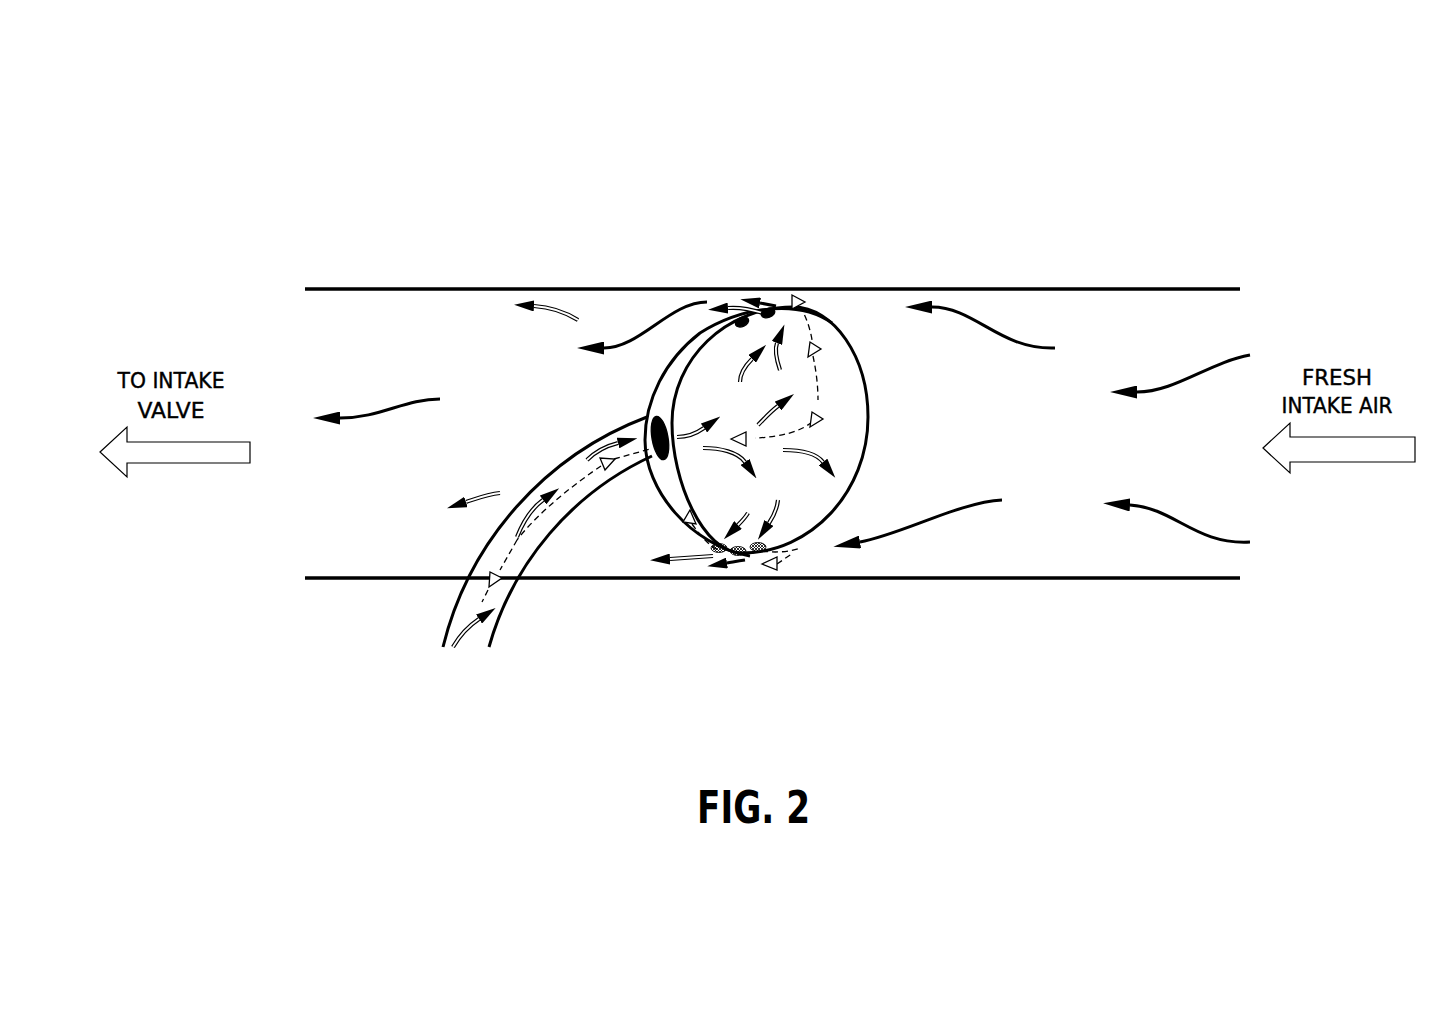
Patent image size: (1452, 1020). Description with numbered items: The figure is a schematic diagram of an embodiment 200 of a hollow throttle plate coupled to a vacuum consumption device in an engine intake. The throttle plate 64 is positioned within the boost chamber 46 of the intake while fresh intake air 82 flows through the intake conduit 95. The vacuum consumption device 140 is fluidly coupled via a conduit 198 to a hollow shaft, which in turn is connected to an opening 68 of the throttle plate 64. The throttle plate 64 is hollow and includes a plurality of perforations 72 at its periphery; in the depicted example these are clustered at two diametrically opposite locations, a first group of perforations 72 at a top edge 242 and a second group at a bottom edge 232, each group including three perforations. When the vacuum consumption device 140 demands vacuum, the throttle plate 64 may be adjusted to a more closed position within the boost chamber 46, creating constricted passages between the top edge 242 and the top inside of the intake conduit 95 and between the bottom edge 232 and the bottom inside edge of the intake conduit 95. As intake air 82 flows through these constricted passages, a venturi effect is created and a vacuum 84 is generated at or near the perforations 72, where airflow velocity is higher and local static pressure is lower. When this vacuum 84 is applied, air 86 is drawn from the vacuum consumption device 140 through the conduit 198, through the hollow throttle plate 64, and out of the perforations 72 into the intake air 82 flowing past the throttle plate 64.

The embodiment of a hollow throttle plate 200 is at (298, 80).
The boost chamber 46 is at (1078, 449).
The throttle plate 64 is at (845, 483).
The opening 68 is at (650, 418).
The perforations 72 is at (744, 328).
The fresh intake air 82 is at (1180, 380).
The vacuum 84 is at (815, 400).
The air 86 is at (590, 447).
The intake conduit 95 is at (917, 580).
The vacuum consumption device 140 is at (451, 685).
The conduit 198 is at (567, 508).
The bottom edge 232 is at (756, 582).
The top edge 242 is at (784, 280).